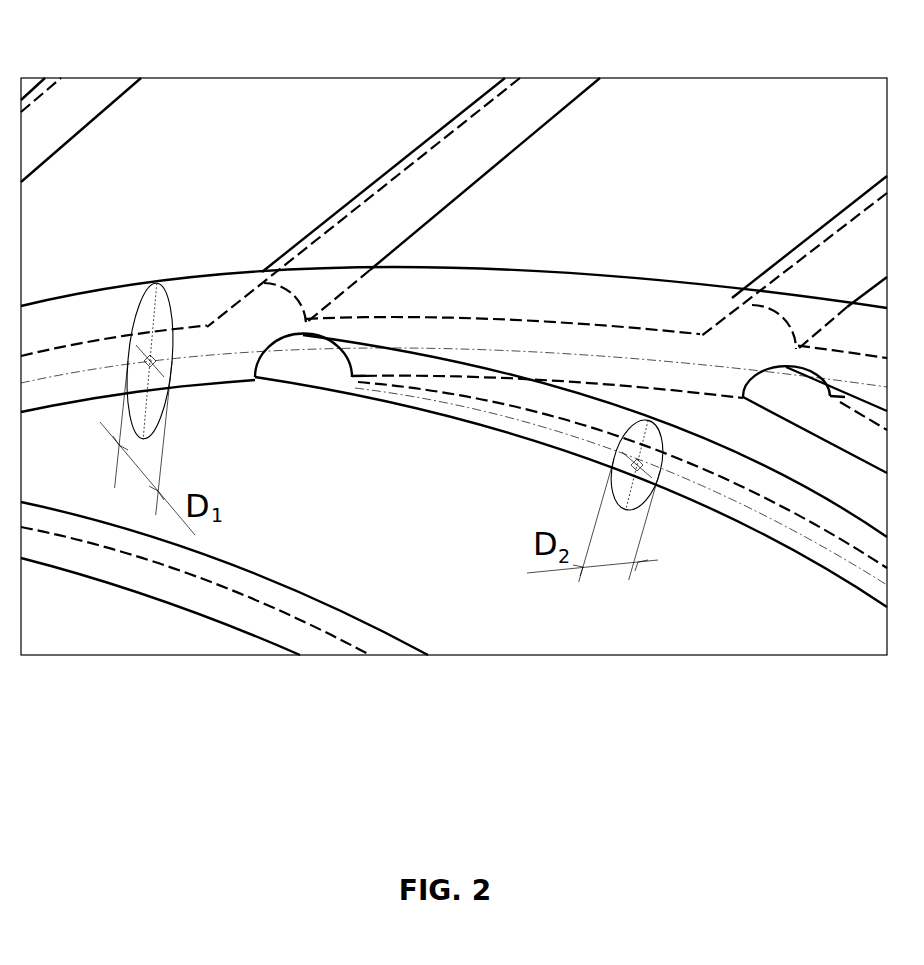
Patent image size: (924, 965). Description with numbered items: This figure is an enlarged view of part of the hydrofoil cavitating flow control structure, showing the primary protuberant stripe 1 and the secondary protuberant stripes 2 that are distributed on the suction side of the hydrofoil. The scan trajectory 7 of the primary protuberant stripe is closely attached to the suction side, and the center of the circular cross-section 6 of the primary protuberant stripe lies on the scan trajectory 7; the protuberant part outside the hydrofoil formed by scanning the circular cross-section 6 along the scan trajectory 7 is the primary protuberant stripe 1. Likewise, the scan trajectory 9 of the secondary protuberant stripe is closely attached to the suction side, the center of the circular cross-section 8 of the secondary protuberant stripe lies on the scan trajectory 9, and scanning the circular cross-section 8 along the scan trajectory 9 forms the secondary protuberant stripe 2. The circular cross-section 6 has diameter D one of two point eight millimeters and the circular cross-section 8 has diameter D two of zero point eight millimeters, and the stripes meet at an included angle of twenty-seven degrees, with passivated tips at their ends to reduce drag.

The primary protuberant stripe 1 is at (606, 269).
The secondary protuberant stripe 2 is at (372, 172).
The circular cross-section of the primary protuberant stripe 6 is at (169, 279).
The scan trajectory of the primary protuberant stripe 7 is at (650, 347).
The circular cross-section of secondary protuberant stripe 8 is at (652, 518).
The scan trajectory of secondary protuberant stripe 9 is at (826, 572).